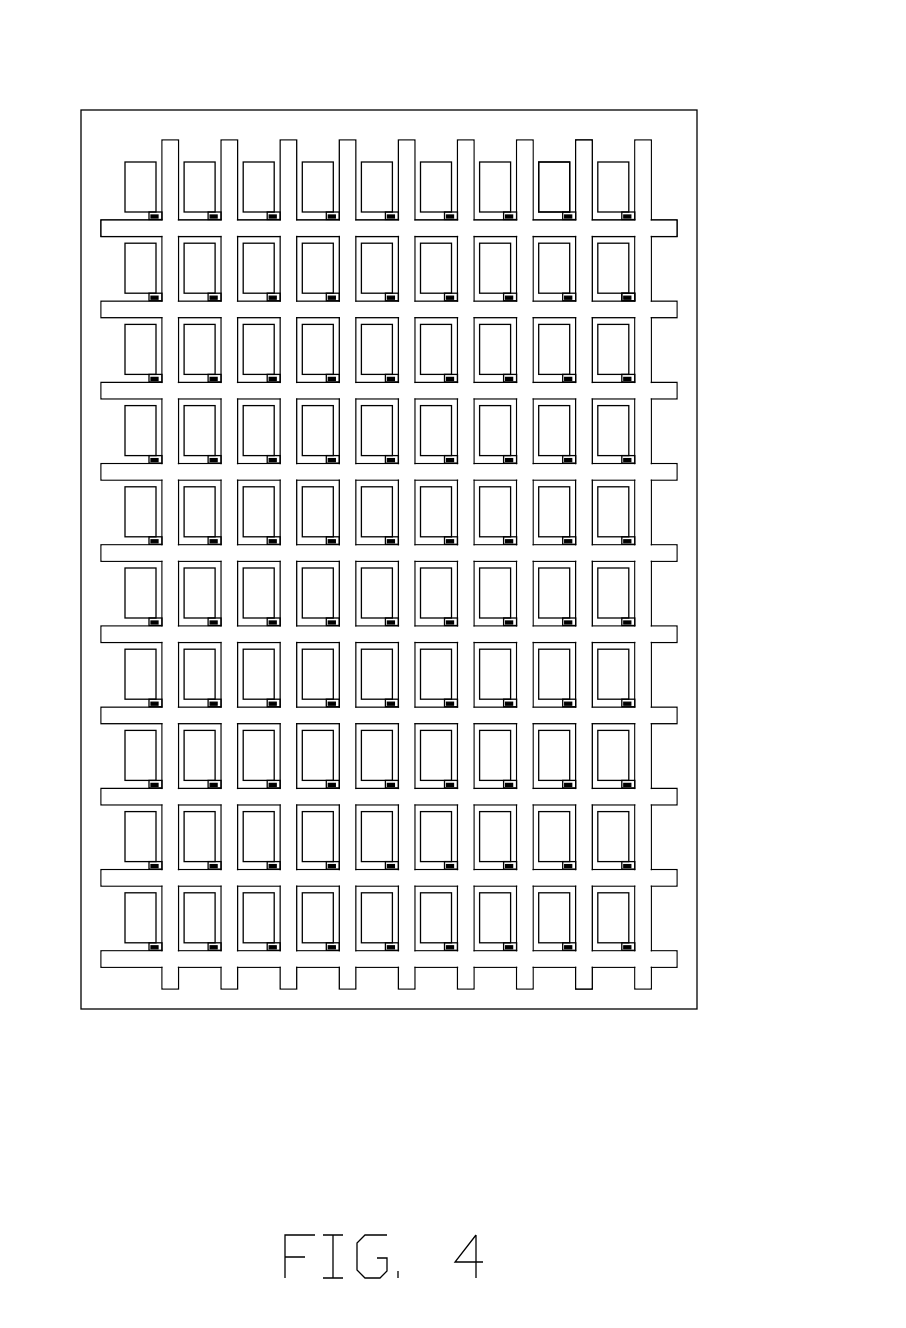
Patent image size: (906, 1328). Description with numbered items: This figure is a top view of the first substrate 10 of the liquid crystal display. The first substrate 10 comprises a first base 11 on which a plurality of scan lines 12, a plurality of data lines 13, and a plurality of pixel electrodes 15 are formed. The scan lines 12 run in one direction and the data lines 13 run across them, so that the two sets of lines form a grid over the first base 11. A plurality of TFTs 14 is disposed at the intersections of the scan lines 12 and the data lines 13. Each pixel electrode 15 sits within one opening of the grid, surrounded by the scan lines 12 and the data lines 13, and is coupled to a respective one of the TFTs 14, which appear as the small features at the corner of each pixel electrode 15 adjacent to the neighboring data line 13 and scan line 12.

The first substrate 10 is at (197, 62).
The first base 11 is at (681, 129).
The scan lines 12 is at (655, 230).
The data lines 13 is at (584, 150).
The TFTs 14 is at (637, 308).
The pixel electrodes 15 is at (560, 172).